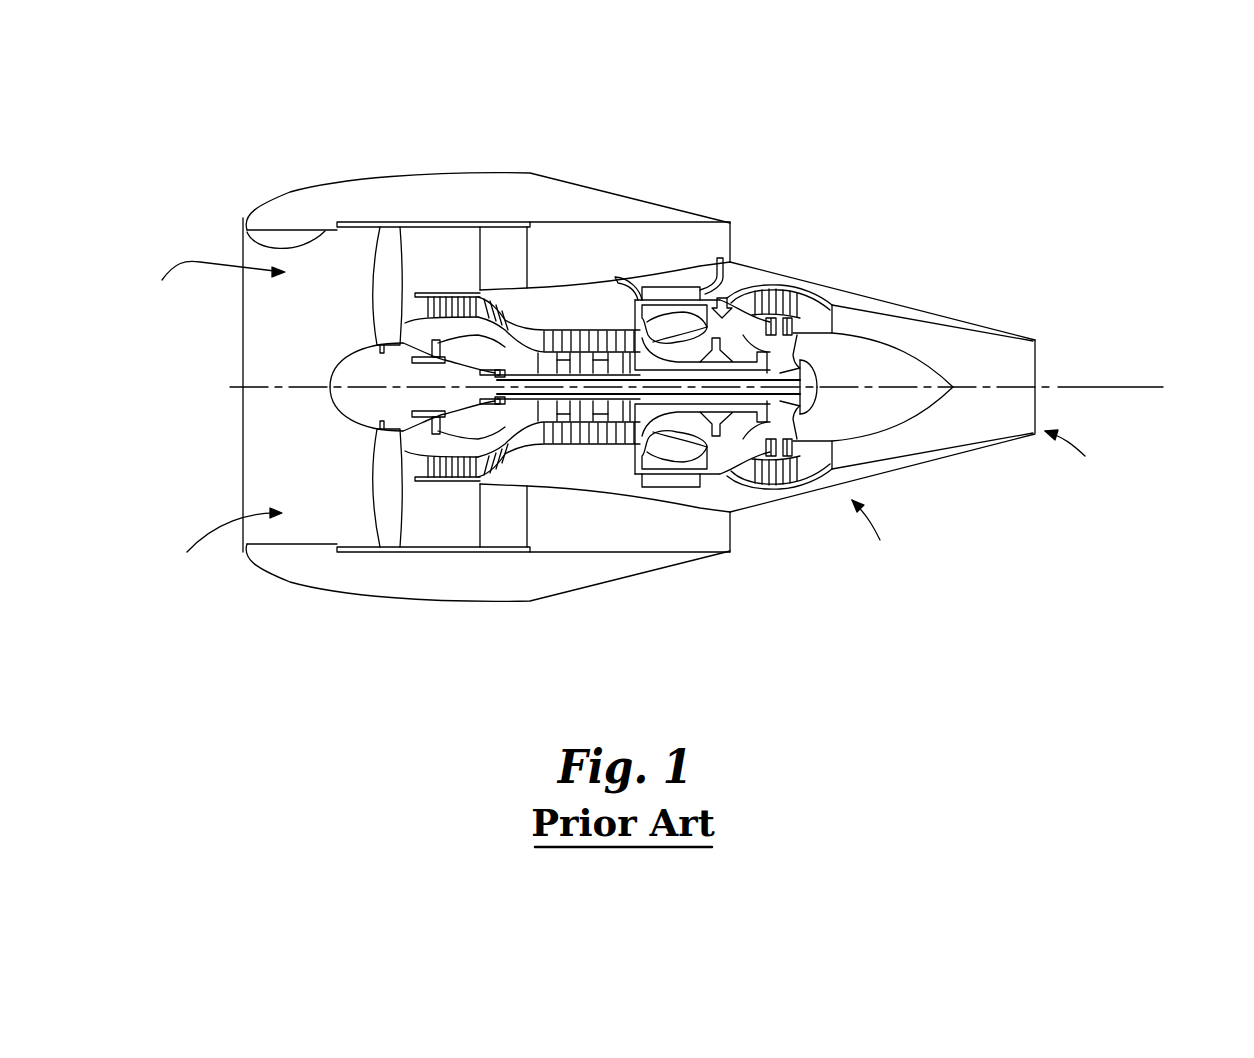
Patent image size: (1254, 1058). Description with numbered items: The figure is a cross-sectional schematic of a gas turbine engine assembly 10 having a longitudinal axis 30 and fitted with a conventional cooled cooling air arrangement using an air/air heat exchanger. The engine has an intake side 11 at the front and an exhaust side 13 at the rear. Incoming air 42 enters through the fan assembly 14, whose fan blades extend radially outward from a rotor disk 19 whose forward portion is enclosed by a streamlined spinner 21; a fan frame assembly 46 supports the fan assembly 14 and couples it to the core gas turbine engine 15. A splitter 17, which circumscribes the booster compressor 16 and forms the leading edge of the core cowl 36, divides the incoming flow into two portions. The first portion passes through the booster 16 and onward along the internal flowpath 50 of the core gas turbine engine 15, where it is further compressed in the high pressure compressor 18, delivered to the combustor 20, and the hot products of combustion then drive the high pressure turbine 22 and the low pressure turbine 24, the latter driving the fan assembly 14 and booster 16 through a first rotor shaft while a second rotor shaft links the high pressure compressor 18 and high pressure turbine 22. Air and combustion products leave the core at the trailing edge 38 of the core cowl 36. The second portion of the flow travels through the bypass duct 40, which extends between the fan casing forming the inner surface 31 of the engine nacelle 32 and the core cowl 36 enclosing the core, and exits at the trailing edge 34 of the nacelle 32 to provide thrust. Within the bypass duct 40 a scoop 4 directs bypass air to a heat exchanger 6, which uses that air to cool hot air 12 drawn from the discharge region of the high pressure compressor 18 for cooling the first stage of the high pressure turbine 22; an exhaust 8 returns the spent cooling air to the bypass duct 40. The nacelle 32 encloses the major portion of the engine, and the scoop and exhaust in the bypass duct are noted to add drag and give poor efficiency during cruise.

The scoop 4 is at (617, 278).
The heat exchanger 6 is at (673, 293).
The exhaust 8 is at (698, 265).
The gas turbine engine assembly 10 is at (178, 150).
The intake side 11 is at (221, 544).
The air 12 is at (756, 277).
The exhaust side 13 is at (1078, 450).
The fan assembly 14 is at (377, 282).
The core gas turbine engine 15 is at (880, 528).
The booster compressor 16 is at (453, 483).
The splitter 17 is at (510, 478).
The high pressure compressor 18 is at (592, 450).
The rotor disk 19 is at (375, 427).
The combustor 20 is at (688, 452).
The spinner 21 is at (343, 398).
The high pressure turbine 22 is at (717, 450).
The low pressure turbine 24 is at (768, 487).
The longitudinal axis 30 is at (1133, 387).
The inner surface 31 is at (245, 233).
The engine nacelle 32 is at (303, 582).
The trailing edge of the nacelle 34 is at (731, 228).
The core cowl 36 is at (925, 458).
The trailing edge of the core cowl 38 is at (1033, 363).
The bypass duct 40 is at (583, 238).
The incoming air 42 is at (209, 284).
The fan frame assembly 46 is at (513, 247).
The internal flowpath 50 is at (790, 357).